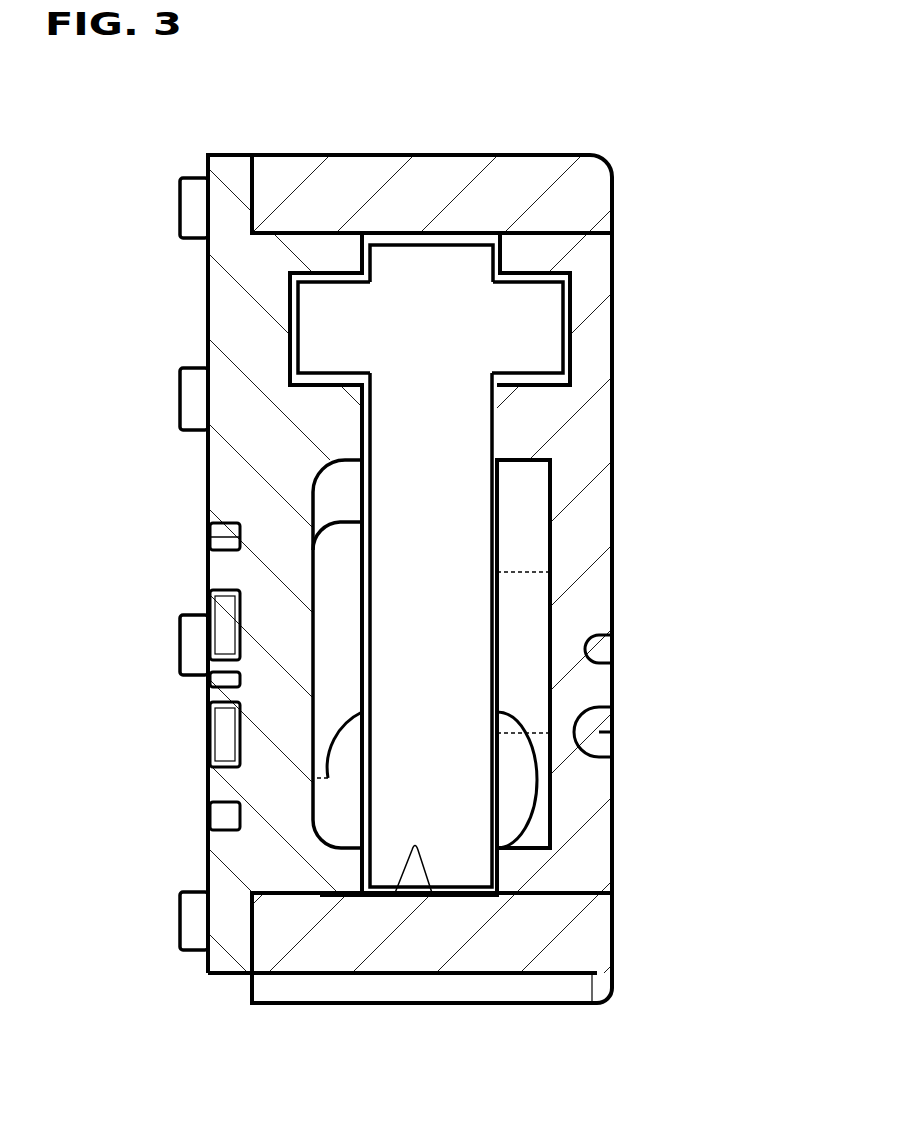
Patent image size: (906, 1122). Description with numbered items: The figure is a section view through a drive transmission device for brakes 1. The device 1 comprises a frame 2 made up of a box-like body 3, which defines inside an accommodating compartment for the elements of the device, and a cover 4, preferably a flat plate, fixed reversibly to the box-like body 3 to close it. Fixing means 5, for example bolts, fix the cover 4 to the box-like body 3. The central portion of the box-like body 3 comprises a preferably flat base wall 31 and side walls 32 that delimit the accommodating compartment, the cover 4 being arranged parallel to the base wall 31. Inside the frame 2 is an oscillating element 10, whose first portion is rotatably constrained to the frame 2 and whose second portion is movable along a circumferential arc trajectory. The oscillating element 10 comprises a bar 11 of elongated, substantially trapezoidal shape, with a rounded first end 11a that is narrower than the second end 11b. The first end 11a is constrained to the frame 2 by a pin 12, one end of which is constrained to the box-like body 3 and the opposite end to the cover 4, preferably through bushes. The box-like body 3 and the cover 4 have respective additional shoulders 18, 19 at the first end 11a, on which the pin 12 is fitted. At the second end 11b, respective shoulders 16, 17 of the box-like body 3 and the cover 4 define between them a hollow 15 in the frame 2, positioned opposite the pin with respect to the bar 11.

The drive transmission device for brakes 1 is at (474, 526).
The frame 2 is at (625, 222).
The box-like body 3 is at (646, 501).
The cover 4 is at (235, 492).
The fixing means 5 is at (195, 208).
The oscillating element 10 is at (518, 473).
The bar 11 is at (495, 687).
The first end 11a is at (443, 850).
The second end 11b is at (418, 258).
The pin 12 is at (440, 320).
The hollow 15 is at (418, 852).
The shoulder 16 is at (505, 862).
The shoulder 17 is at (340, 862).
The additional shoulder 18 is at (520, 430).
The additional shoulder 19 is at (340, 430).
The base wall 31 is at (595, 520).
The side walls 32 is at (340, 177).